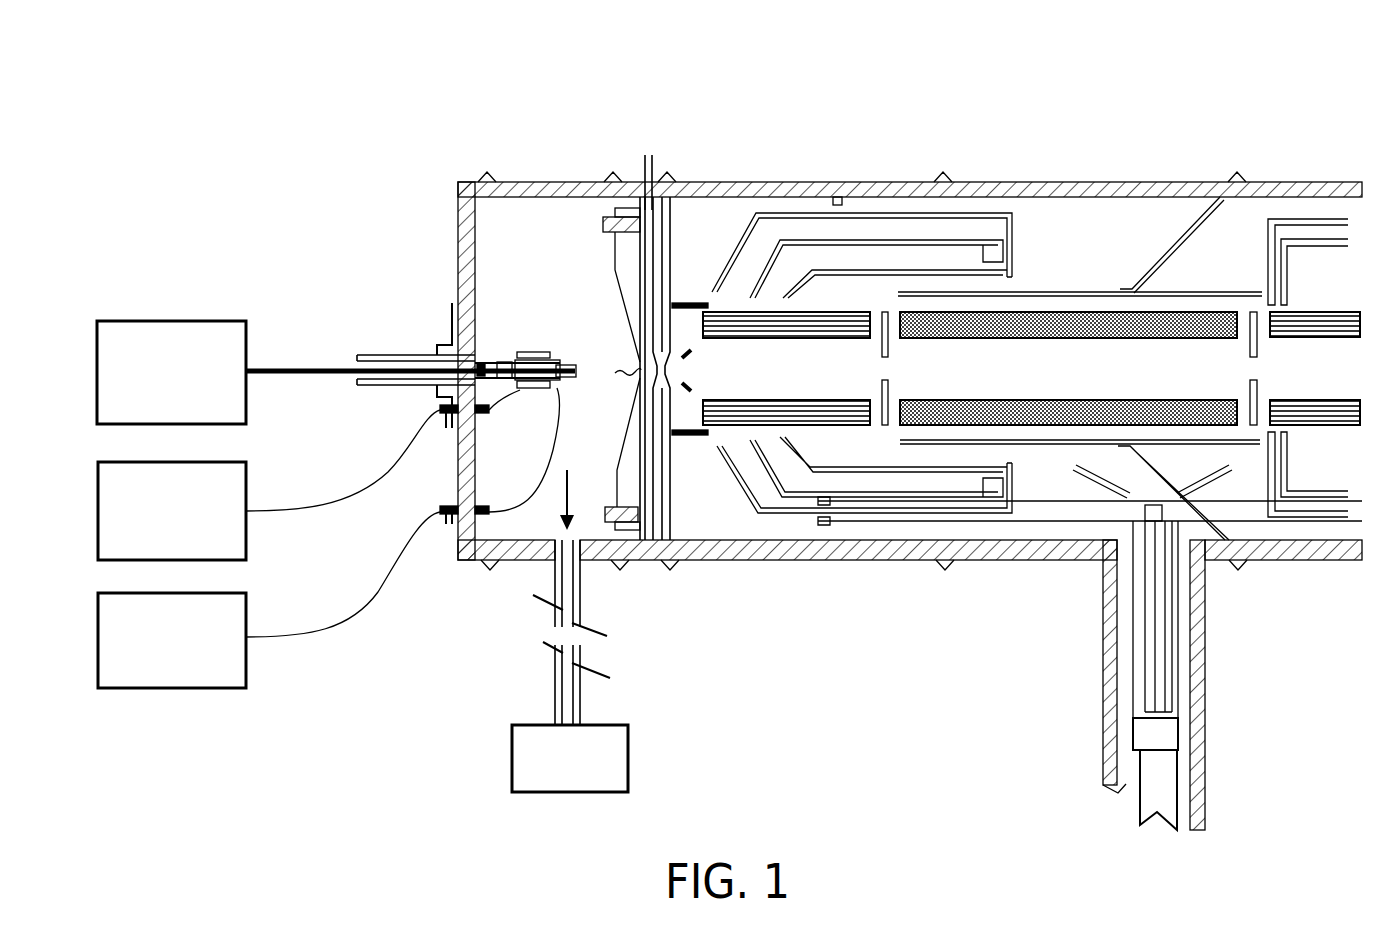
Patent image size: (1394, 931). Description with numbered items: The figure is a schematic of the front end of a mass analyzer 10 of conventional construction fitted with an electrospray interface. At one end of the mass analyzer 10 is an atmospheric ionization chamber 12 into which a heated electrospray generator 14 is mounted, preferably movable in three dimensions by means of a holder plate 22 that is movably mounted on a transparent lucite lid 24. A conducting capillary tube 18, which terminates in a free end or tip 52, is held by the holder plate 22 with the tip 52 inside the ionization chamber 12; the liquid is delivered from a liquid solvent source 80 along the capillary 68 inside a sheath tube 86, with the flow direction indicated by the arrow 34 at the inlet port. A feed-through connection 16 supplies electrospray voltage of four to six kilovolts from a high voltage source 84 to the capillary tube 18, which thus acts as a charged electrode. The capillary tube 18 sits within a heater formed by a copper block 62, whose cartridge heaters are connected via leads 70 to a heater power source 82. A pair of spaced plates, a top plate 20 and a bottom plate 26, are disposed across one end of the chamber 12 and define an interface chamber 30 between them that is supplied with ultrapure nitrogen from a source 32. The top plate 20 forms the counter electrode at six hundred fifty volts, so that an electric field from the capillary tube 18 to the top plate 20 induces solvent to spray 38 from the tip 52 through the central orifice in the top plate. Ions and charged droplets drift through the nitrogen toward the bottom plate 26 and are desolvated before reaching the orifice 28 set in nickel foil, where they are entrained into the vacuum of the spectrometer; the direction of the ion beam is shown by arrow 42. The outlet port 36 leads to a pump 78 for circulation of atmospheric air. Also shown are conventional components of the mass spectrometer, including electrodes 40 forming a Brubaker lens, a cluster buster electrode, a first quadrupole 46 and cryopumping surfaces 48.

The mass analyzer 10 is at (696, 428).
The ionization chamber 12 is at (515, 208).
The heated electrospray generator 14 is at (414, 302).
The feed-through connection 16 is at (445, 524).
The capillary tube 18 is at (503, 356).
The top plate 20 is at (613, 272).
The holder plate 22 is at (455, 303).
The transparent lucite lid 24 is at (458, 196).
The bottom plate 26 is at (673, 210).
The orifice 28 is at (710, 371).
The interface chamber 30 is at (656, 558).
The nitrogen gas source 32 is at (648, 142).
The inlet port 34 is at (342, 381).
The outlet port 36 is at (575, 628).
The orifice 38 is at (612, 372).
The electrodes 40 is at (820, 423).
The cluster buster electrode 42 is at (694, 370).
The first quadrupole 46 is at (1045, 338).
The cryopumping surfaces 48 is at (840, 196).
The tip 52 is at (573, 362).
The copper block 62 is at (533, 350).
The liquid capillary 68 is at (300, 366).
The leads 70 is at (500, 408).
The pump 78 is at (630, 760).
The liquid solvent source 80 is at (97, 385).
The power source 82 is at (98, 520).
The high voltage source 84 is at (98, 652).
The sheath tube 86 is at (378, 353).